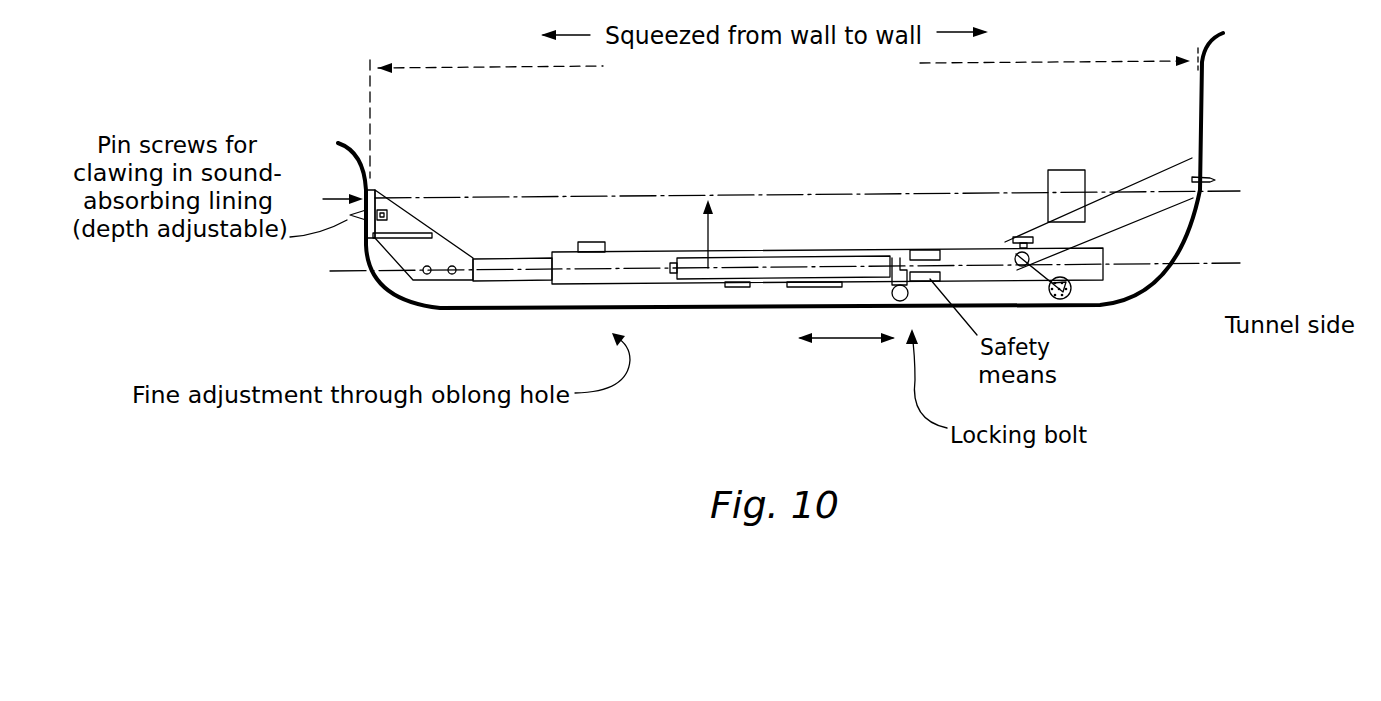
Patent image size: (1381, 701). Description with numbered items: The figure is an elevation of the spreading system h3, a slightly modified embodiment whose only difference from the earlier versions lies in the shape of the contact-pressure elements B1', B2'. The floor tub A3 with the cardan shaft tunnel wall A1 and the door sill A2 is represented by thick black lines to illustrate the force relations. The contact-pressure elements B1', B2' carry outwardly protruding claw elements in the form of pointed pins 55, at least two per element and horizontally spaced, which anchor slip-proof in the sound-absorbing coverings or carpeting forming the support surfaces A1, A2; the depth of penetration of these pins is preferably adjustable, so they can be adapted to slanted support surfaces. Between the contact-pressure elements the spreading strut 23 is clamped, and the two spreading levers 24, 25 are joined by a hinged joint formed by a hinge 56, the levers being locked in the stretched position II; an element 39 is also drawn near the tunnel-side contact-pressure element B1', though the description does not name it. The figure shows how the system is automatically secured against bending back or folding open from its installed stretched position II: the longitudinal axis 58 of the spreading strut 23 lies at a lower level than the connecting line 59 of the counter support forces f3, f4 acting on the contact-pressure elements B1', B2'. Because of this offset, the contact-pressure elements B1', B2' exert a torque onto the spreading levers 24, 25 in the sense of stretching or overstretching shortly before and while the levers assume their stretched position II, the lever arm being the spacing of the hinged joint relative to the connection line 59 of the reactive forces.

The spreading lever 23 is at (709, 240).
The spreading lever 24 is at (927, 247).
The spreading lever 25 is at (567, 249).
The support box 39 is at (1048, 168).
The pointed pin 55 is at (350, 213).
The hinge 56 is at (767, 300).
The longitudinal axis 58 is at (1120, 266).
The connecting line 59 is at (897, 194).
The cardan shaft tunnel wall A1 is at (1192, 142).
The door sill A2 is at (396, 226).
The floor tub A3 is at (697, 313).
The contact-pressure element B1' is at (1099, 192).
The contact-pressure element B2' is at (424, 277).
The counter support force f3 is at (1205, 190).
The counter support force f4 is at (333, 192).
The spreading system h3 is at (729, 119).
The stretched position II is at (657, 247).